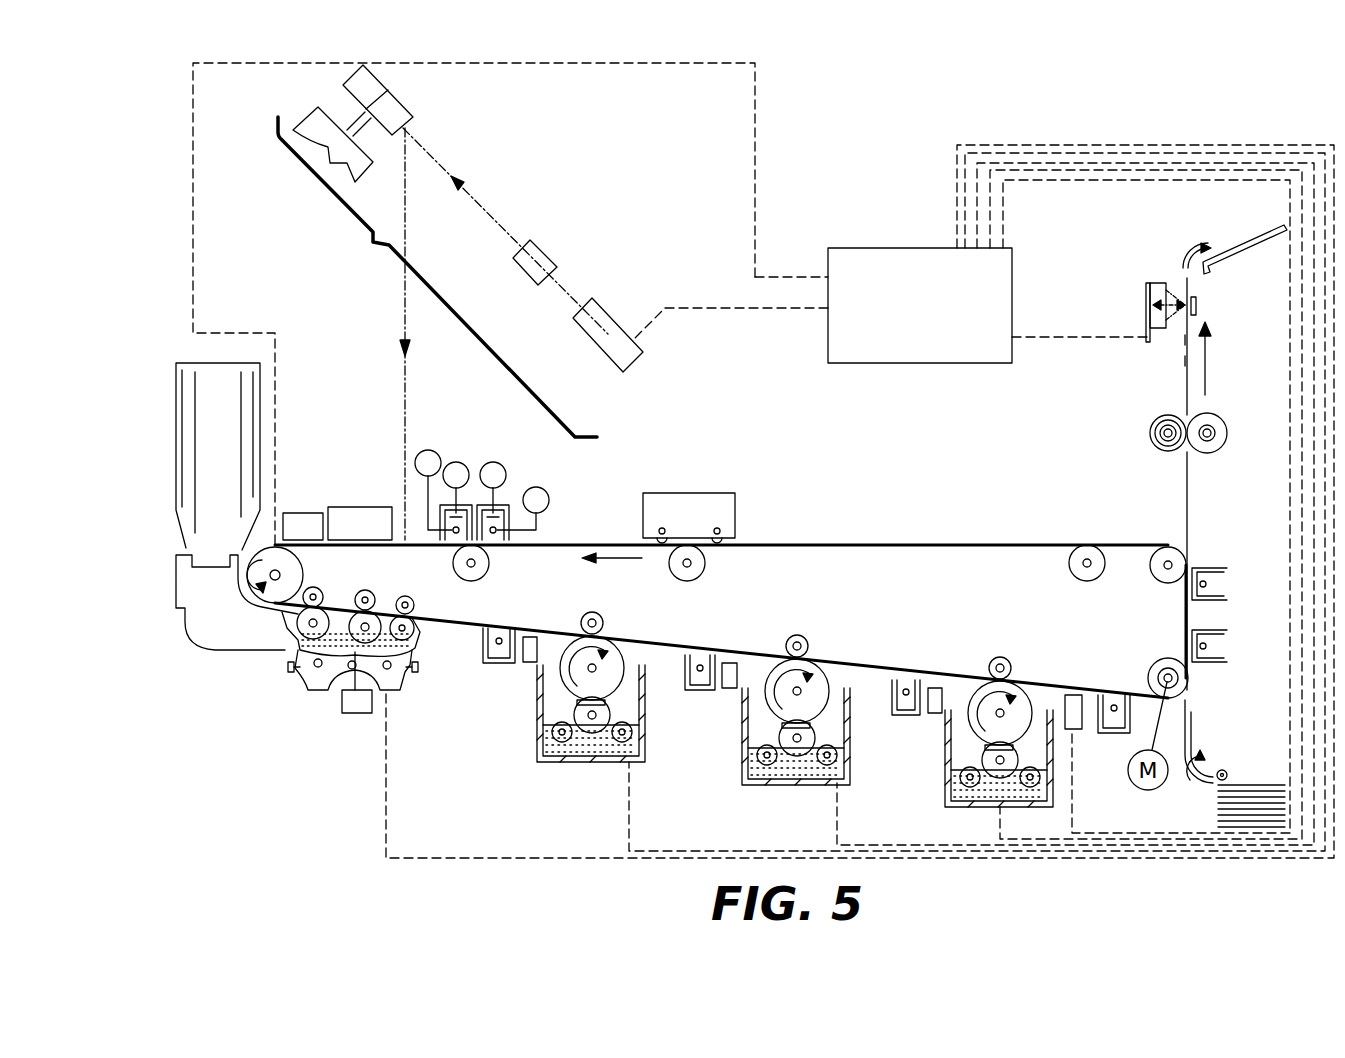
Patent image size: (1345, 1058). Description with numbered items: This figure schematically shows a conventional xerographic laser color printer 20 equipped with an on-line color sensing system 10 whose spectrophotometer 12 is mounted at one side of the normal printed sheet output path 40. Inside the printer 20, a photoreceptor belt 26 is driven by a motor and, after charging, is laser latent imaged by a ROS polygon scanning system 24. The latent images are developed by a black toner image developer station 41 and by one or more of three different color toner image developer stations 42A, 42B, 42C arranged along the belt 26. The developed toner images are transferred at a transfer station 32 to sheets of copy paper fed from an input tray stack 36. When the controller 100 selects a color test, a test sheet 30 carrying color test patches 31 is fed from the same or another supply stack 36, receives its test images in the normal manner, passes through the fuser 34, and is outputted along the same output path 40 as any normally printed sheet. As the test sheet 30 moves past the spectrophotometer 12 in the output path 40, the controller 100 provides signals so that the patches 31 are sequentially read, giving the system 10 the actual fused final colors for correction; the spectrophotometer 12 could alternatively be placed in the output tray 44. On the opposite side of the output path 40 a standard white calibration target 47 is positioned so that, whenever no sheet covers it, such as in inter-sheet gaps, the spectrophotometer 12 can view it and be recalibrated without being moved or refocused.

The color sensing system 10 is at (1144, 258).
The spectrophotometer 12 is at (1147, 300).
The color printer 20 is at (937, 150).
The ROS polygon scanning system 24 is at (370, 248).
The photoreceptor belt 26 is at (1035, 545).
The test sheet 30 is at (1188, 290).
The color test patch 31 is at (1187, 362).
The transfer station 32 is at (1246, 565).
The fuser 34 is at (1170, 398).
The input tray stack 36 is at (1245, 785).
The output path 40 is at (1207, 370).
The black toner image developer station 41 is at (395, 680).
The color toner image developer station 42A is at (590, 762).
The color toner image developer station 42B is at (800, 785).
The color toner image developer station 42C is at (960, 807).
The output tray 44 is at (1262, 245).
The white calibration target 47 is at (1197, 302).
The controller 100 is at (880, 248).